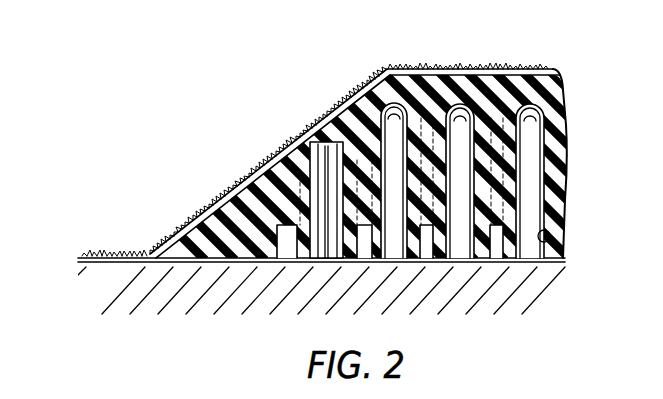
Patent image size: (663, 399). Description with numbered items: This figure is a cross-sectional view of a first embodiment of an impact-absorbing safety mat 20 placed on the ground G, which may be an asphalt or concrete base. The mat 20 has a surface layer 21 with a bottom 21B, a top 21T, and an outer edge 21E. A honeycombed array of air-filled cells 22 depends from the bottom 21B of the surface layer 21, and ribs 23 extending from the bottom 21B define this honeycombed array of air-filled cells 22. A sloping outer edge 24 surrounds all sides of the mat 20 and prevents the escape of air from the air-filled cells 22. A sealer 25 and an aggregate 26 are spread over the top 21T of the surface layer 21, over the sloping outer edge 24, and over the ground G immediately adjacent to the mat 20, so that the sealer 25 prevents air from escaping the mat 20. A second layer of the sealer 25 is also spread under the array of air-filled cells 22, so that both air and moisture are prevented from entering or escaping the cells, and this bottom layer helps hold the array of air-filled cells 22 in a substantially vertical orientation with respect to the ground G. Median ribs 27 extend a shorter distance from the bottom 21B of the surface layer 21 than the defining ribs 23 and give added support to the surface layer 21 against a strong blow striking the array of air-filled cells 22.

The impact-absorbing safety mat 20 is at (572, 186).
The surface layer 21 is at (553, 91).
The bottom 21B is at (361, 97).
The outer edge 21E is at (293, 143).
The top 21T is at (508, 84).
The air-filled cells 22 is at (328, 158).
The ribs 23 is at (550, 237).
The sloping outer edge 24 is at (200, 233).
The sealer 25 is at (78, 258).
The aggregate 26 is at (100, 252).
The median ribs 27 is at (418, 77).
The ground G is at (99, 296).